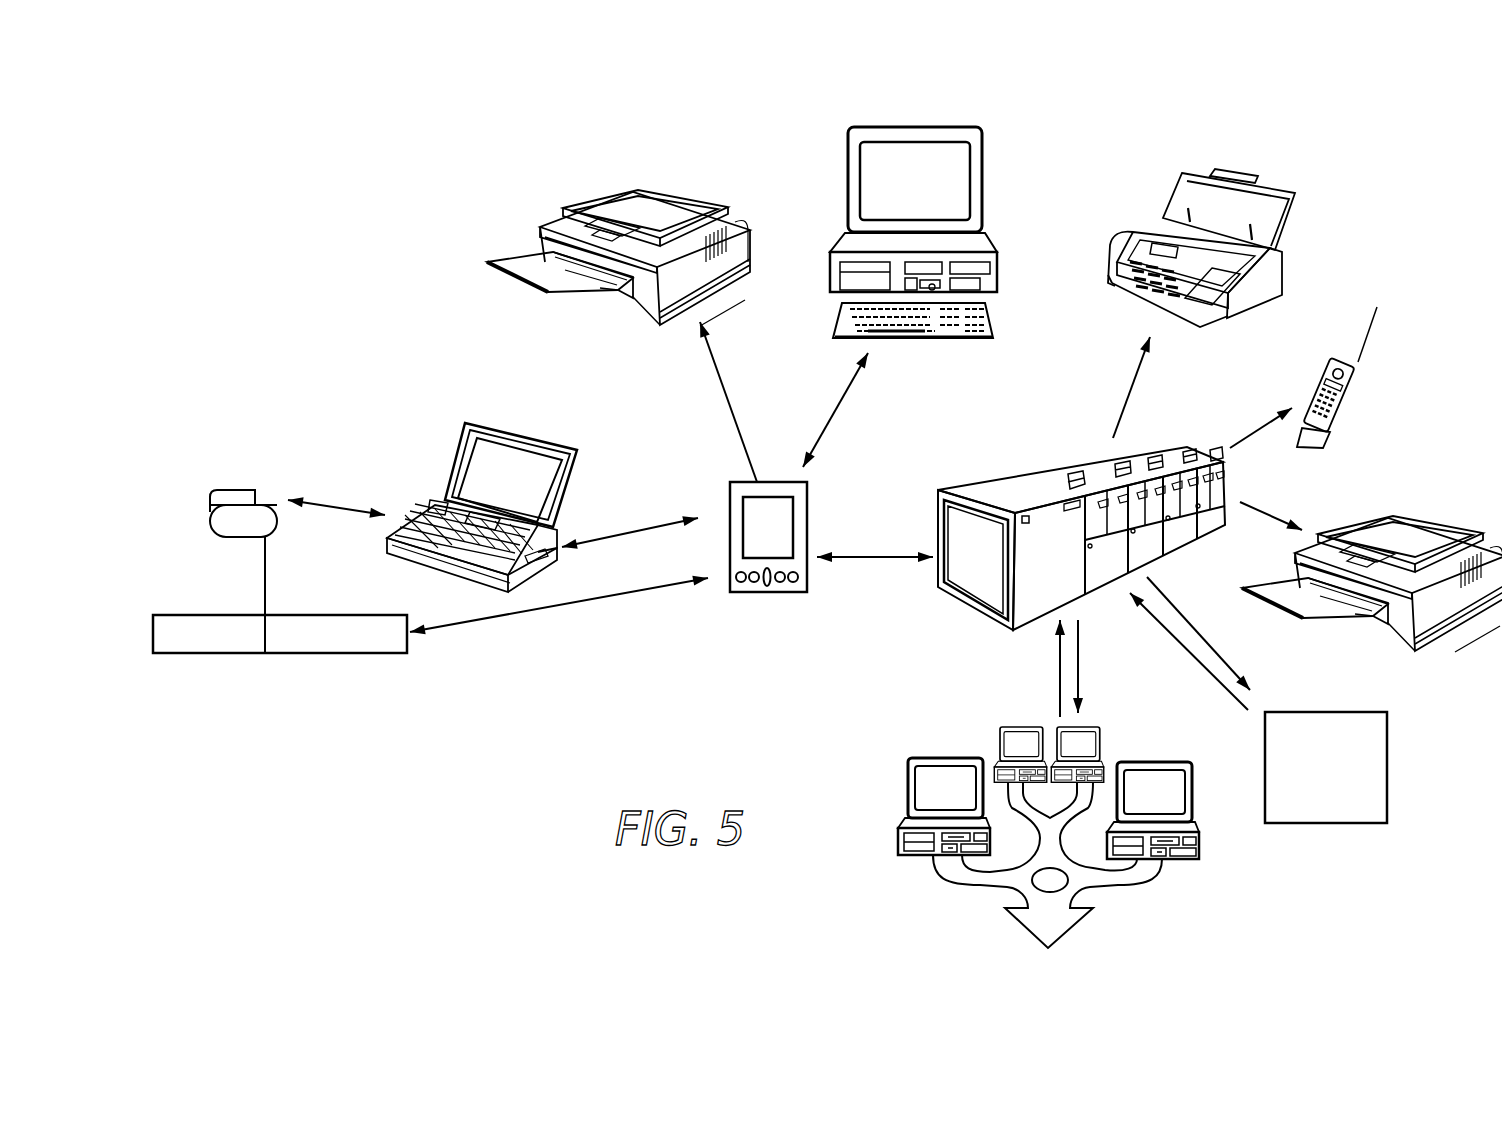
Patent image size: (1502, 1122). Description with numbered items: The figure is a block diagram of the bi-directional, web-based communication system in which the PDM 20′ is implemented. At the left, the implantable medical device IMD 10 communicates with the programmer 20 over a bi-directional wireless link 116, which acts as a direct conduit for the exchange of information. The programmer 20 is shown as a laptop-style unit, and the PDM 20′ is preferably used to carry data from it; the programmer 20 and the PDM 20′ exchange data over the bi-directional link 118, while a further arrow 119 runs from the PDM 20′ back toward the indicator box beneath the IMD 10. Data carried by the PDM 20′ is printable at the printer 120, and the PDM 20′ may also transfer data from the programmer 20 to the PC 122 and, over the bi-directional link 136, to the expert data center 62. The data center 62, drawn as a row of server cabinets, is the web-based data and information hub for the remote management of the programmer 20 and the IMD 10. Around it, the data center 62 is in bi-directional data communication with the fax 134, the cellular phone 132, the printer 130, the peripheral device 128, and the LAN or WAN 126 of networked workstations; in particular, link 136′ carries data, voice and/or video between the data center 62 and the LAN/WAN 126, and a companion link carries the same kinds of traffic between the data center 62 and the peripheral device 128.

The IMD 10 is at (282, 520).
The link 116 is at (326, 508).
The programmer 20 is at (542, 440).
The link 118 is at (630, 533).
The communication link to regulated/unregulated indicator 119 is at (527, 615).
The PDM 20′ is at (763, 592).
The printer 120 is at (715, 300).
The PC 122 is at (845, 400).
The link 136 is at (860, 557).
The expert data center 62 is at (1080, 555).
The fax 134 is at (1280, 275).
The cellular phone 132 is at (1355, 405).
The printer 130 is at (1395, 515).
The link 136′ is at (1040, 668).
The LAN or WAN 126 is at (1120, 888).
The peripheral device 128 is at (1387, 748).